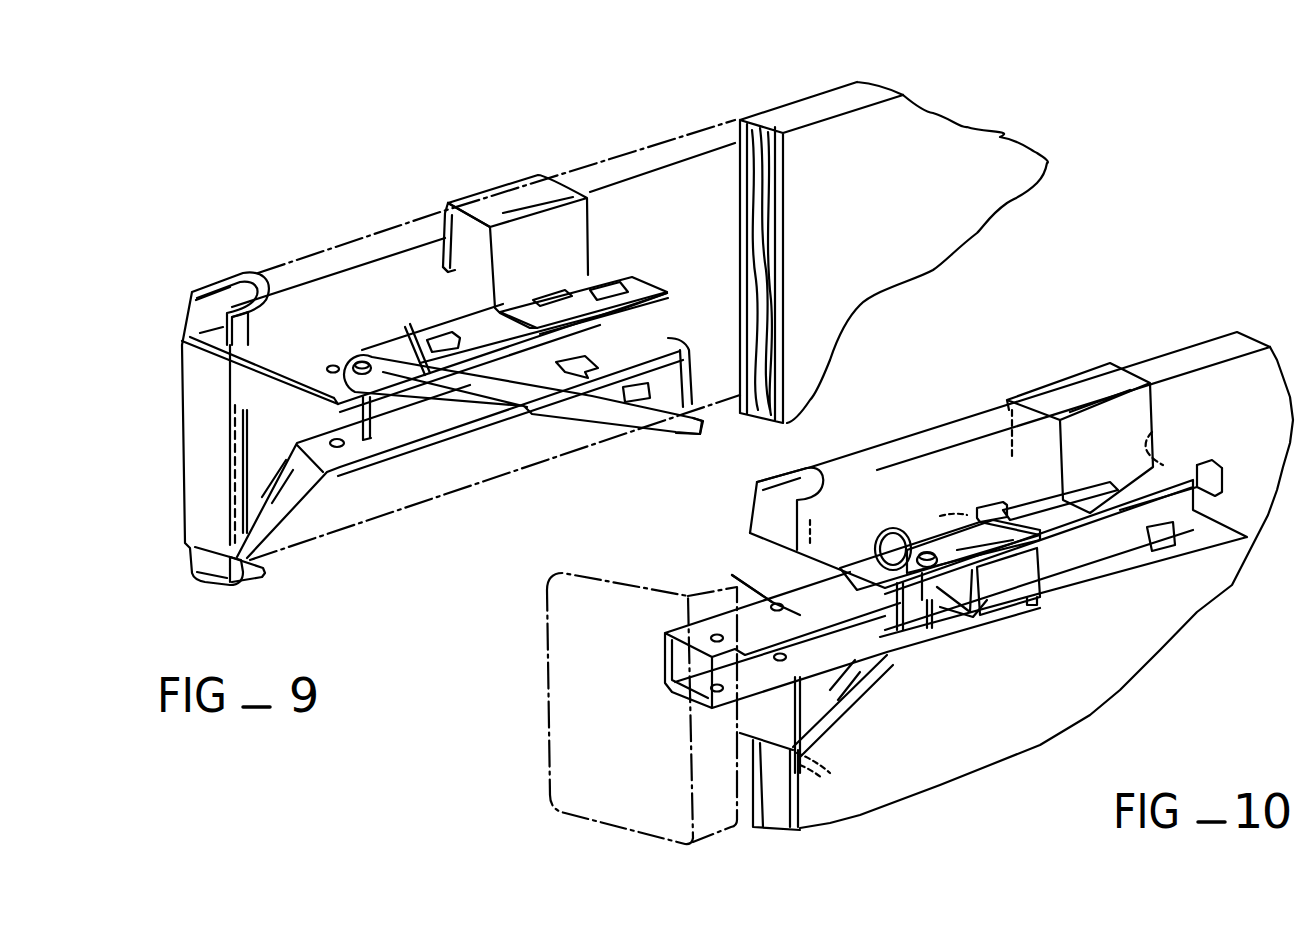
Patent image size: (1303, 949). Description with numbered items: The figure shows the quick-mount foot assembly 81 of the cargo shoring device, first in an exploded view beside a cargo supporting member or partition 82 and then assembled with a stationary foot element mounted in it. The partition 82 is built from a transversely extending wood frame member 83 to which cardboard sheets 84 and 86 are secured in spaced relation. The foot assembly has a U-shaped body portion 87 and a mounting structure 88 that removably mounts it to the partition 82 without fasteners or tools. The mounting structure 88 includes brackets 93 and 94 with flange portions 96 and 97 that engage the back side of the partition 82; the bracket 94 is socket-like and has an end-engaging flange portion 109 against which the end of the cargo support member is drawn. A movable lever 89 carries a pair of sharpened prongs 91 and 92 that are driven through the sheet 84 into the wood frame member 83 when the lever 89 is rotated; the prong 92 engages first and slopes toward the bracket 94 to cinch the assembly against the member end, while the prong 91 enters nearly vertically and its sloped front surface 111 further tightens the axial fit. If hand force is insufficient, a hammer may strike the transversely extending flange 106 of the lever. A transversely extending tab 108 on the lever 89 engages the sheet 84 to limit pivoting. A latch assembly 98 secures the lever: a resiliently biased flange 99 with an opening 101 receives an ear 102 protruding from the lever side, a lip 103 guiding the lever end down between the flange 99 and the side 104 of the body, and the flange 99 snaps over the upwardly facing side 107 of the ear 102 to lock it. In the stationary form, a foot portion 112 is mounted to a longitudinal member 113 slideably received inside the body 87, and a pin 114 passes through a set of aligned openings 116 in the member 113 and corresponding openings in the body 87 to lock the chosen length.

In FIG. 9, the quick-mount foot assembly 81 is at (405, 497).
In FIG. 10, the quick-mount foot assembly 81 is at (1048, 630).
In FIG. 9, the cargo supporting member or partition 82 is at (952, 222).
In FIG. 9, the wood frame member 83 is at (757, 297).
In FIG. 9, the sheet 84 is at (783, 245).
In FIG. 9, the sheet 86 is at (740, 233).
In FIG. 9, the body portion 87 is at (462, 335).
In FIG. 10, the body portion 87 is at (868, 567).
In FIG. 9, the mounting structure 88 is at (544, 166).
In FIG. 10, the mounting structure 88 is at (1080, 363).
In FIG. 9, the lever 89 is at (493, 385).
In FIG. 10, the lever 89 is at (1047, 543).
In FIG. 9, the prong 91 is at (692, 358).
In FIG. 9, the prong 92 is at (415, 345).
In FIG. 10, the prong 92 is at (934, 512).
In FIG. 9, the bracket 93 is at (513, 200).
In FIG. 10, the bracket 93 is at (1057, 388).
In FIG. 9, the bracket 94 is at (238, 287).
In FIG. 10, the bracket 94 is at (763, 510).
In FIG. 9, the flange portion 96 is at (437, 217).
In FIG. 9, the flange portion 97 is at (253, 331).
In FIG. 9, the latch assembly 98 is at (662, 240).
In FIG. 10, the latch assembly 98 is at (1214, 452).
In FIG. 9, the flange 99 is at (594, 282).
In FIG. 9, the opening 101 is at (607, 283).
In FIG. 9, the ear 102 is at (643, 402).
In FIG. 9, the lip 103 is at (625, 286).
In FIG. 9, the side 104 is at (670, 296).
In FIG. 9, the transversely extending flange 106 is at (700, 430).
In FIG. 10, the transversely extending flange 106 is at (1205, 487).
In FIG. 9, the upwardly facing side 107 is at (630, 402).
In FIG. 9, the tab 108 is at (428, 335).
In FIG. 10, the tab 108 is at (997, 505).
In FIG. 9, the end-engaging flange portion 109 is at (270, 300).
In FIG. 10, the end-engaging flange portion 109 is at (810, 525).
In FIG. 9, the sloped front surface 111 is at (687, 350).
In FIG. 10, the sloped front surface 111 is at (1160, 424).
In FIG. 10, the foot portion 112 is at (545, 767).
In FIG. 10, the longitudinal member 113 is at (753, 613).
In FIG. 10, the pin 114 is at (900, 612).
In FIG. 10, the openings 116 is at (777, 603).